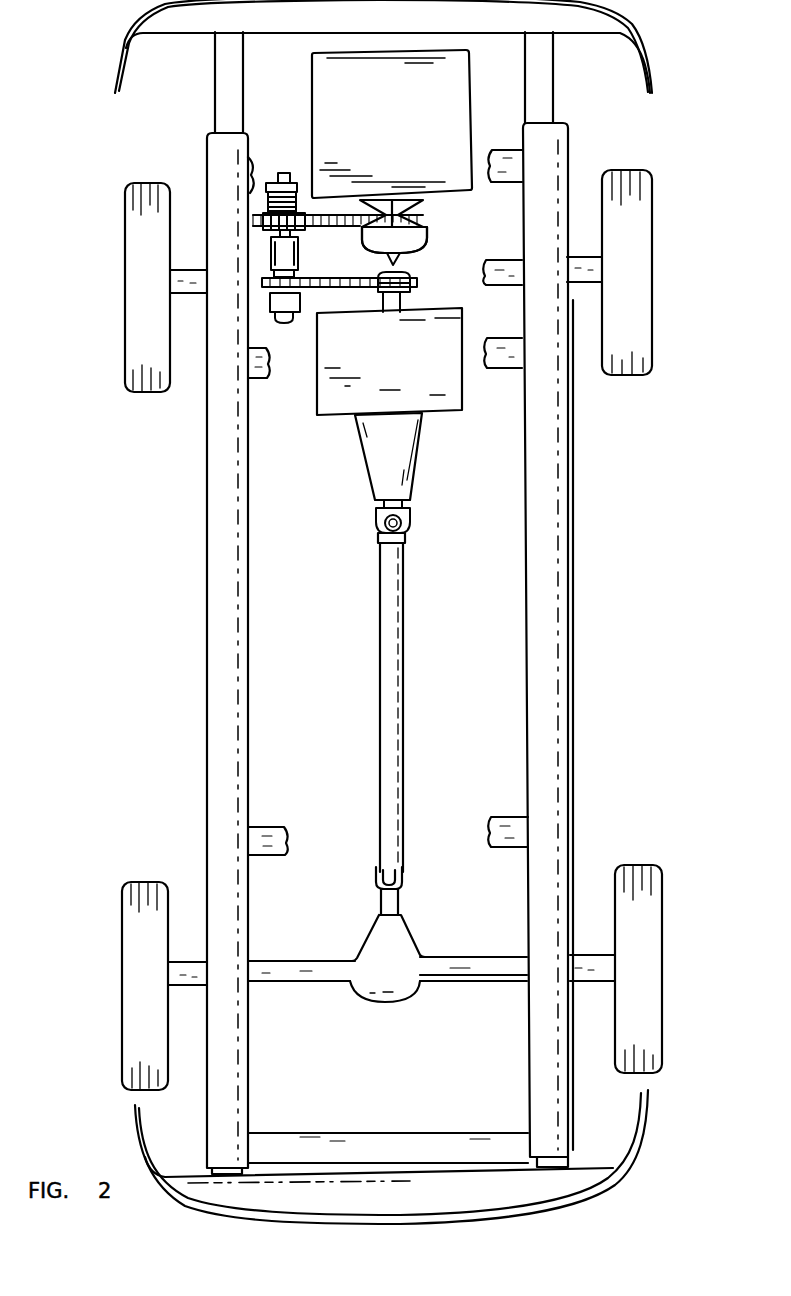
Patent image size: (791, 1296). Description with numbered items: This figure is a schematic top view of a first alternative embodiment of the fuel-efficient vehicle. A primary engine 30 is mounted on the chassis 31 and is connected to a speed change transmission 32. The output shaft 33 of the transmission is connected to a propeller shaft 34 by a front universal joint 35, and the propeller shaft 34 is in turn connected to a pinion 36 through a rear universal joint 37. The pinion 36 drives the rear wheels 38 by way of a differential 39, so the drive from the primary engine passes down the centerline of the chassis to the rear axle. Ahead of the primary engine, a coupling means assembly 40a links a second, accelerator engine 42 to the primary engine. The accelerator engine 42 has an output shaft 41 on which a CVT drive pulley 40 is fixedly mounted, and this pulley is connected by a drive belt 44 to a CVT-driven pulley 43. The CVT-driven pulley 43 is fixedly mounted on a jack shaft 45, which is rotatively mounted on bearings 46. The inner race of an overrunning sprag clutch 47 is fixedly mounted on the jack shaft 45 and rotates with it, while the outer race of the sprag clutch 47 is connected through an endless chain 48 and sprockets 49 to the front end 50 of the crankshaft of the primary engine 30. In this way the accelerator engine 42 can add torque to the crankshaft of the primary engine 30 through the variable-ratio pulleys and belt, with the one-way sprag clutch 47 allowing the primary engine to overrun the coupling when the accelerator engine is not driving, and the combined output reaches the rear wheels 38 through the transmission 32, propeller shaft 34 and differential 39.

The primary engine 30 is at (393, 377).
The chassis 31 is at (572, 622).
The speed change transmission 32 is at (407, 466).
The output shaft 33 is at (410, 510).
The propeller shaft 34 is at (403, 707).
The front universal joint 35 is at (407, 520).
The pinion 36 is at (398, 903).
The rear universal joint 37 is at (402, 875).
The rear wheels 38 is at (122, 931).
The differential 39 is at (398, 972).
The CVT drive pulley 40 is at (420, 227).
The coupling means assembly 40a is at (444, 233).
The output shaft 41 is at (400, 258).
The accelerator engine 42 is at (392, 139).
The CVT-driven pulley 43 is at (308, 213).
The drive belt 44 is at (348, 226).
The jack shaft 45 is at (280, 173).
The bearings 46 is at (270, 254).
The overrunning sprag clutch 47 is at (299, 322).
The endless chain 48 is at (315, 278).
The sprockets 49 is at (272, 272).
The front end of the crankshaft 50 is at (405, 301).